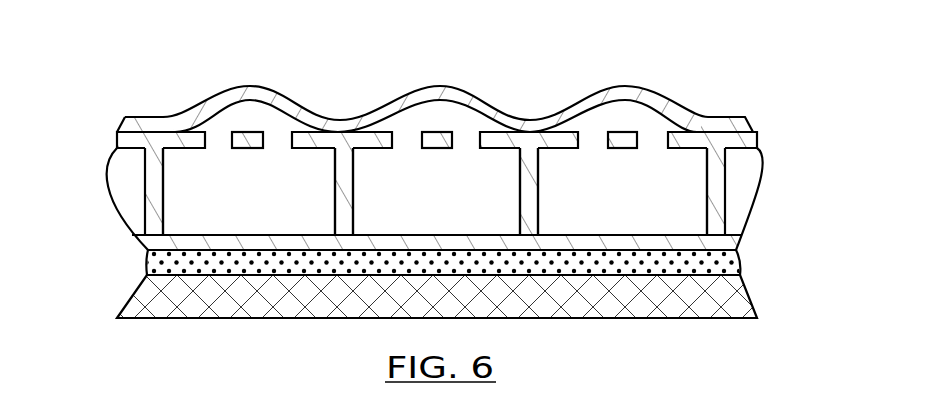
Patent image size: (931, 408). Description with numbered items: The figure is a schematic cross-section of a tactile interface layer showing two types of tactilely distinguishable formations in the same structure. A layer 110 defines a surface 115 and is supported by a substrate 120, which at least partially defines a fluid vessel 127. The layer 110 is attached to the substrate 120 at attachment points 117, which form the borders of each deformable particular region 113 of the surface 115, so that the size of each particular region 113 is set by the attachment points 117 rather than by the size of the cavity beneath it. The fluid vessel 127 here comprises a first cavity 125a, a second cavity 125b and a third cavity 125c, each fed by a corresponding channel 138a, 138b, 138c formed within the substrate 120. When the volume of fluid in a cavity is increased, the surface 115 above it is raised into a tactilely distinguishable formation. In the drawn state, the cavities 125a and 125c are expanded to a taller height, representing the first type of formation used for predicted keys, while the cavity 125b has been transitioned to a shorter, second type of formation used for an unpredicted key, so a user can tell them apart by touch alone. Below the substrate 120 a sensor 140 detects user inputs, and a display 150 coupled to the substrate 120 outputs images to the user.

The layer 110 is at (735, 123).
The particular region 113 is at (250, 85).
The surface 115 is at (708, 116).
The attachment point 117 is at (165, 130).
The substrate 120 is at (745, 138).
The first cavity 125a is at (263, 123).
The second cavity 125b is at (424, 125).
The cavity 125c is at (636, 124).
The fluid vessel 127 is at (227, 136).
The channel 138a is at (249, 191).
The channel 138b is at (436, 191).
The channel 138c is at (622, 191).
The sensor 140 is at (729, 262).
The display 150 is at (735, 292).